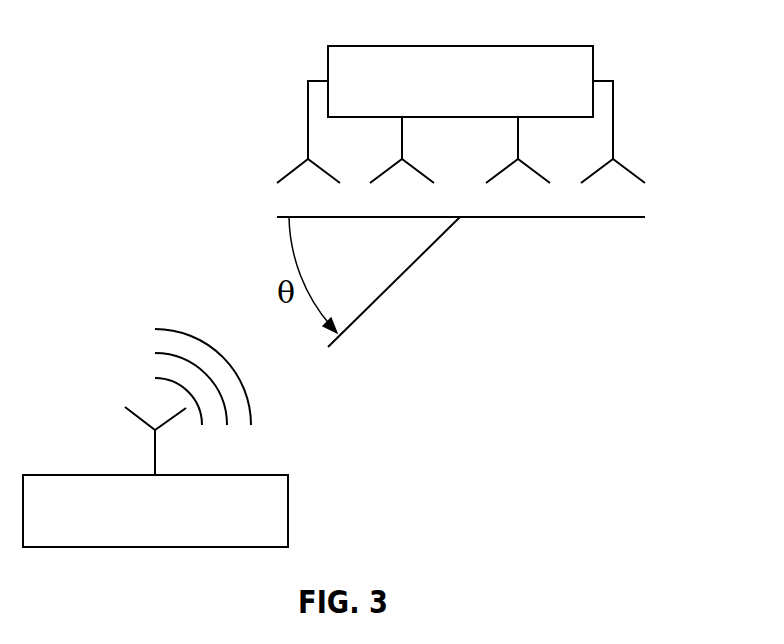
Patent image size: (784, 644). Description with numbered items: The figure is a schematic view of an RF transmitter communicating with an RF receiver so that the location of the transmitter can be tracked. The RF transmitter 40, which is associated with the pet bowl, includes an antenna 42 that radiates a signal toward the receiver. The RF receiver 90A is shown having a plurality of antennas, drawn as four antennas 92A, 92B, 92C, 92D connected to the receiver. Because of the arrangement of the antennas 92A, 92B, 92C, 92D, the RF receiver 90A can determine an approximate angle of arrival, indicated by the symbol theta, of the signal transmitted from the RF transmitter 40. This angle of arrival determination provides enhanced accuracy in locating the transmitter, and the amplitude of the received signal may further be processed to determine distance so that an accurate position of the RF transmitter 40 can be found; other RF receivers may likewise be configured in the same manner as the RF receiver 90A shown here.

The RF receiver 90A is at (573, 46).
The antenna 92A is at (288, 173).
The antenna 92B is at (390, 168).
The antenna 92C is at (533, 167).
The antenna 92D is at (637, 172).
The RF transmitter 40 is at (268, 475).
The antenna 42 is at (137, 420).